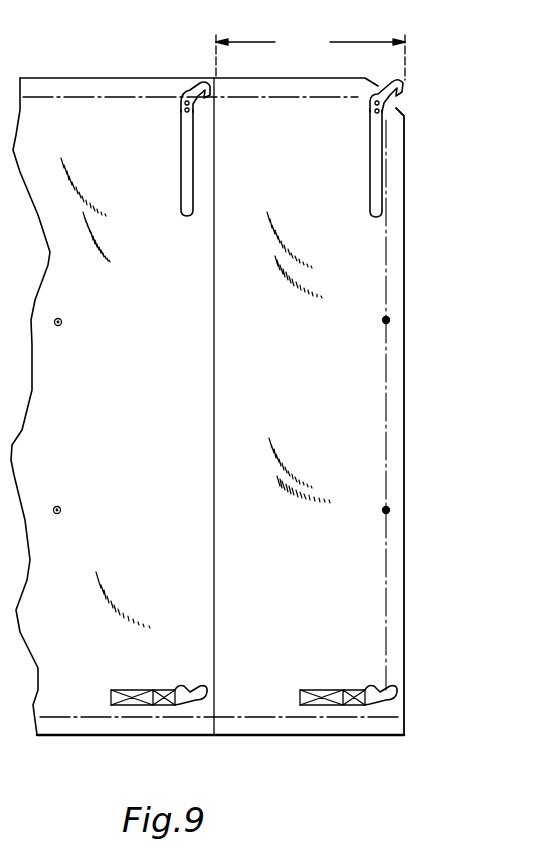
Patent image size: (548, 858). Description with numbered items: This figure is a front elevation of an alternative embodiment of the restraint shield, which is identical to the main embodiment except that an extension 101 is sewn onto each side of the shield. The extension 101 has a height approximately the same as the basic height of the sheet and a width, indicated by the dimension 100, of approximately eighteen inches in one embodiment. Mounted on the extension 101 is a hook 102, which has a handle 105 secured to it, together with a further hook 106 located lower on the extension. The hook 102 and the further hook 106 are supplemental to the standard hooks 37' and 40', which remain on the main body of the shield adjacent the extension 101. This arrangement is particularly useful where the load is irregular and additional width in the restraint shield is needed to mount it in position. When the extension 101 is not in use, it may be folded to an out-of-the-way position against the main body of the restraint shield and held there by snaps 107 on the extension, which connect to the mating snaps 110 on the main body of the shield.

The dimension 100 is at (310, 54).
The extension 101 is at (388, 370).
The hook 102 is at (391, 97).
The handle 105 is at (375, 163).
The further hook 106 is at (377, 706).
The snaps 107 is at (389, 317).
The mating snaps 110 is at (62, 319).
The standard hook 37' is at (167, 70).
The standard hook 40' is at (159, 673).